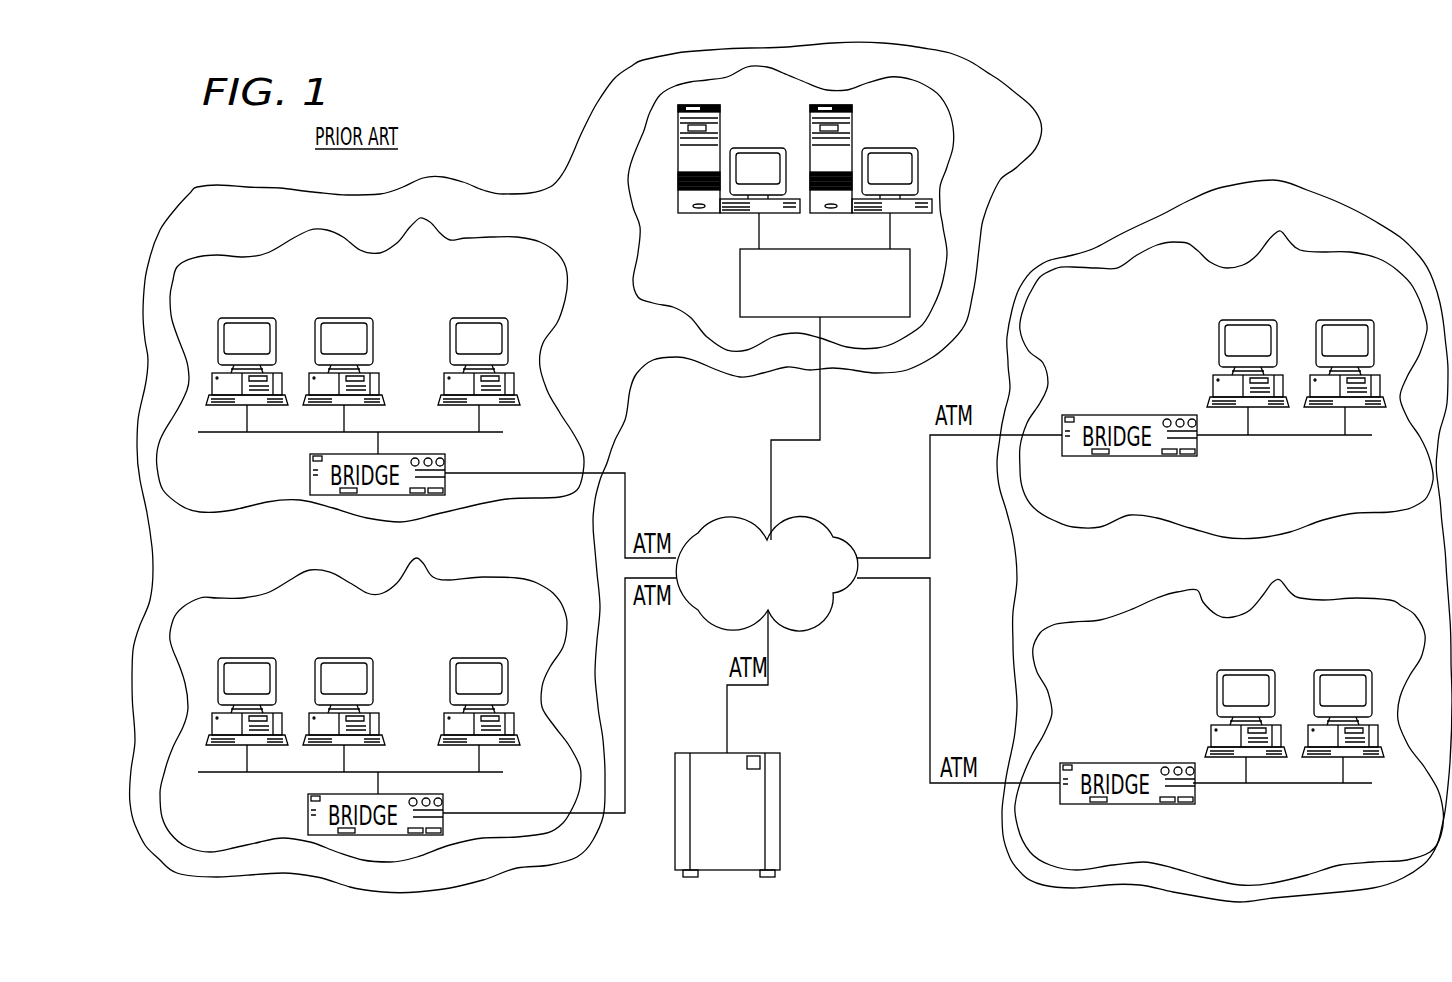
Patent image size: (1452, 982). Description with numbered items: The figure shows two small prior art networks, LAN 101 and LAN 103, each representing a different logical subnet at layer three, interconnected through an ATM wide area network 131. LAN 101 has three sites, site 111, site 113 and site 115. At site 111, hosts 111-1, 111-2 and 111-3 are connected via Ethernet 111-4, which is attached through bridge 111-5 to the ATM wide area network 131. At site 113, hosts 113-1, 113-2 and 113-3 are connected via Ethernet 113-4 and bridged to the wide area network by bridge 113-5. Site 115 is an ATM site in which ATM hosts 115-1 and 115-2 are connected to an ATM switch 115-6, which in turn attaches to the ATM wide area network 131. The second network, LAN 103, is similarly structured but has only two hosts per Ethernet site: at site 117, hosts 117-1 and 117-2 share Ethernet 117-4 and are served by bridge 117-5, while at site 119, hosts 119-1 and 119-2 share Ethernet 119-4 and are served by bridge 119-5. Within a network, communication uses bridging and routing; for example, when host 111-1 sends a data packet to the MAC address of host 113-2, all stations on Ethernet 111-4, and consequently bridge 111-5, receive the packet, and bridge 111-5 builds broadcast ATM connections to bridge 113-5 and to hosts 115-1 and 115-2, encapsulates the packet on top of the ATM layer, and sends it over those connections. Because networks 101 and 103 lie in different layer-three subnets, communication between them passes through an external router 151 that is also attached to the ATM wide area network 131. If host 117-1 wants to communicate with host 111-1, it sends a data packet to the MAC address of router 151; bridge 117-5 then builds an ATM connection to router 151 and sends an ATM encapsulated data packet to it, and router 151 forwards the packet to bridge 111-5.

The LAN 101 is at (1045, 122).
The LAN 103 is at (1313, 196).
The site 111 is at (229, 255).
The host 111-1 is at (251, 318).
The host 111-2 is at (349, 318).
The host 111-3 is at (482, 318).
The Ethernet 111-4 is at (418, 430).
The bridge 111-5 is at (310, 469).
The site 113 is at (229, 597).
The host 113-1 is at (251, 658).
The host 113-2 is at (349, 658).
The host 113-3 is at (482, 658).
The Ethernet 113-4 is at (416, 771).
The bridge 113-5 is at (308, 809).
The site 115 is at (947, 165).
The ATM host 115-1 is at (758, 148).
The ATM host 115-2 is at (892, 148).
The ATM switch 115-6 is at (742, 285).
The site 117 is at (1195, 594).
The host 117-1 is at (1249, 670).
The host 117-2 is at (1346, 670).
The Ethernet 117-4 is at (1290, 785).
The bridge 117-5 is at (1153, 806).
The site 119 is at (1197, 250).
The host 119-1 is at (1251, 320).
The host 119-2 is at (1348, 320).
The Ethernet 119-4 is at (1290, 436).
The bridge 119-5 is at (1153, 458).
The ATM wide area network 131 is at (727, 527).
The external router 151 is at (780, 818).